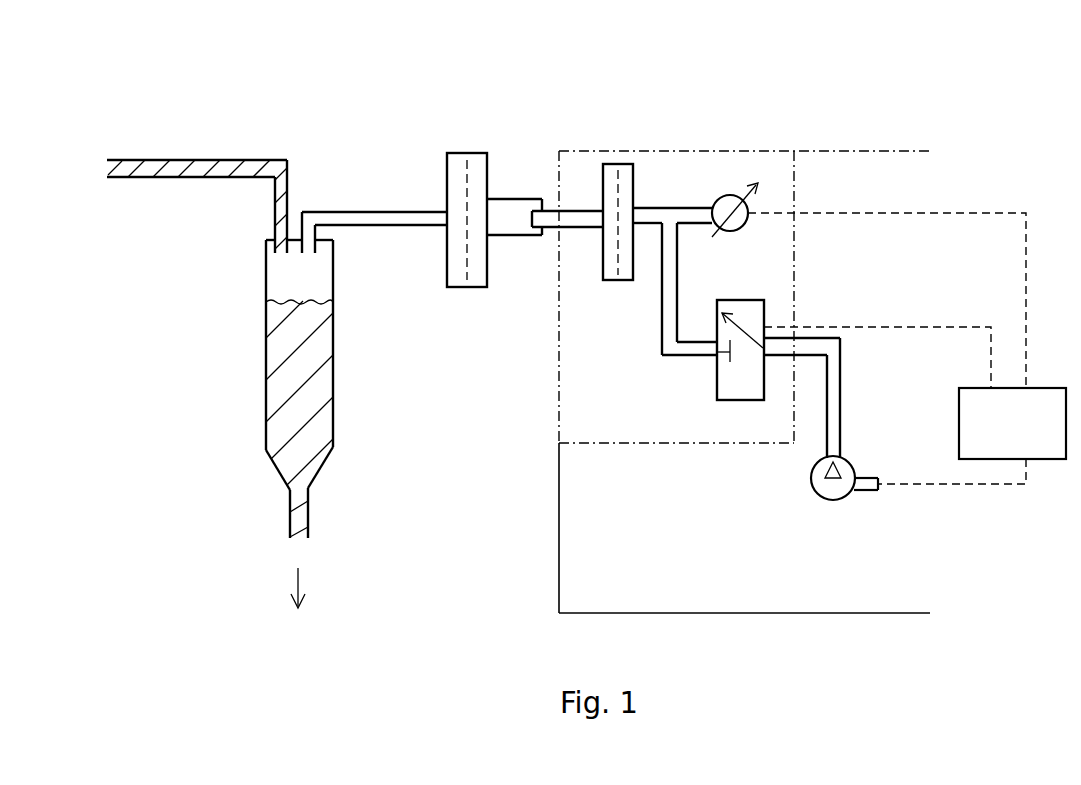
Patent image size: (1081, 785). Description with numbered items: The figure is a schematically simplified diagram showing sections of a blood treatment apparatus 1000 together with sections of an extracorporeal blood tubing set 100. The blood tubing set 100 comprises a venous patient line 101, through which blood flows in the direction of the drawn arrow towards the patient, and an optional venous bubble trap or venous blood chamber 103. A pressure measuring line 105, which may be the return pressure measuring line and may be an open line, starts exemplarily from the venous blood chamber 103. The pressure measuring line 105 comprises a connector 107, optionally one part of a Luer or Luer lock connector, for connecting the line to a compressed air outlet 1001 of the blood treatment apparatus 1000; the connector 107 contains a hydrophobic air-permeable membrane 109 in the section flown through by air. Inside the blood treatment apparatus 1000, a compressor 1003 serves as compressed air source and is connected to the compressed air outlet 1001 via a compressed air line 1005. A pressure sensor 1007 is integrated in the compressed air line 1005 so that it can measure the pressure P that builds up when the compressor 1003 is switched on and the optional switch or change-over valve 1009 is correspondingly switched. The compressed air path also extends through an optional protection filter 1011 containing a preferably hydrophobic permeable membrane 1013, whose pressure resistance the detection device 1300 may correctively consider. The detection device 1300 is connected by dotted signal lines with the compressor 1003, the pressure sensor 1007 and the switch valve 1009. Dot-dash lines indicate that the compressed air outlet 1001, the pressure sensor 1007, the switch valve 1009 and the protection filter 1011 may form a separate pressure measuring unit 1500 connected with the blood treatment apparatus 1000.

The blood tubing set 100 is at (191, 283).
The venous patient line 101 is at (240, 168).
The venous blood chamber 103 is at (320, 399).
The pressure measuring line 105 is at (380, 227).
The connector 107 is at (512, 236).
The air-permeable membrane 109 is at (467, 287).
The blood treatment apparatus 1000 is at (916, 299).
The compressed air outlet 1001 is at (550, 208).
The compressor 1003 is at (818, 498).
The compressed air line 1005 is at (667, 212).
The pressure sensor 1007 is at (723, 194).
The switch valve 1009 is at (726, 400).
The protection filter 1011 is at (612, 281).
The permeable membrane 1013 is at (600, 264).
The detection device 1300 is at (907, 348).
The pressure measuring unit 1500 is at (683, 395).